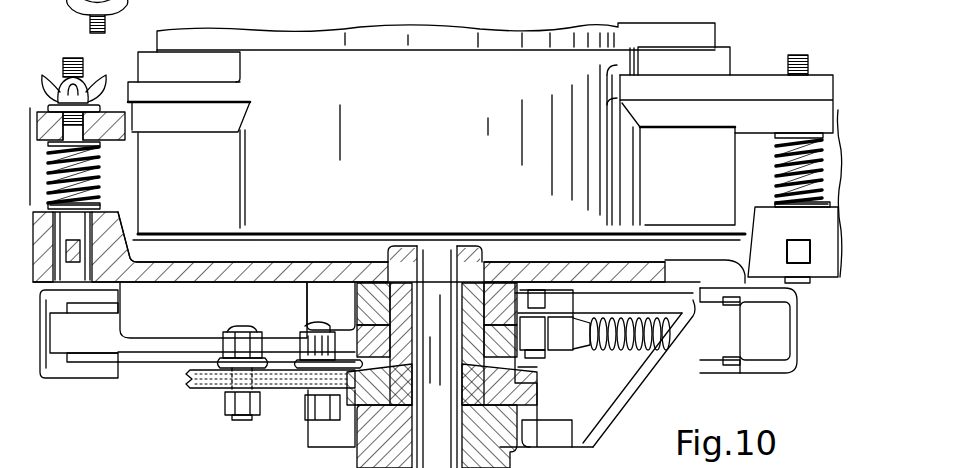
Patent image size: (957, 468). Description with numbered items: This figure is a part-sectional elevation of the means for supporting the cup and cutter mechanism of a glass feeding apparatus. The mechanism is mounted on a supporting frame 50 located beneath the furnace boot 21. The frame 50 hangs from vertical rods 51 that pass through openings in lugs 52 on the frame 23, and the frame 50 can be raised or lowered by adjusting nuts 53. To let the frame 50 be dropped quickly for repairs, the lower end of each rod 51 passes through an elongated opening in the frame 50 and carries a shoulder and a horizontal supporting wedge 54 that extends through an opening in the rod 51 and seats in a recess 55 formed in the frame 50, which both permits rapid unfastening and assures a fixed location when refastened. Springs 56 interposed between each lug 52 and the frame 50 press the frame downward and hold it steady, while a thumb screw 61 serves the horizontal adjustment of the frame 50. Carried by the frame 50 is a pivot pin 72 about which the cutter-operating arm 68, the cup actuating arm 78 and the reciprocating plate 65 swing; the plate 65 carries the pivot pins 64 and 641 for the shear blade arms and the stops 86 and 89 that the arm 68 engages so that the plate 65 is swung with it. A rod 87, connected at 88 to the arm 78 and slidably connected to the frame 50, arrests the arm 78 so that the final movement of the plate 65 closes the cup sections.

The boot 21 is at (434, 125).
The frame 23 is at (205, 220).
The supporting frame 50 is at (219, 272).
The vertical rod 51 is at (96, 181).
The lug 52 is at (105, 140).
The adjusting nut 53 is at (100, 80).
The horizontal supporting wedge 54 is at (100, 241).
The recess 55 is at (80, 283).
The spring 56 is at (98, 203).
The thumb screw 61 is at (127, 5).
The pivot pin 64 is at (335, 445).
The pivot pin 641 is at (650, 420).
The reciprocating plate 65 is at (200, 386).
The cutter-operating arm 68 is at (60, 355).
The pivot pin 72 is at (438, 257).
The cup actuating arm 78 is at (773, 357).
The stop 86 is at (243, 348).
The rod 87 is at (615, 350).
The connection 88 is at (540, 353).
The stop 89 is at (335, 342).